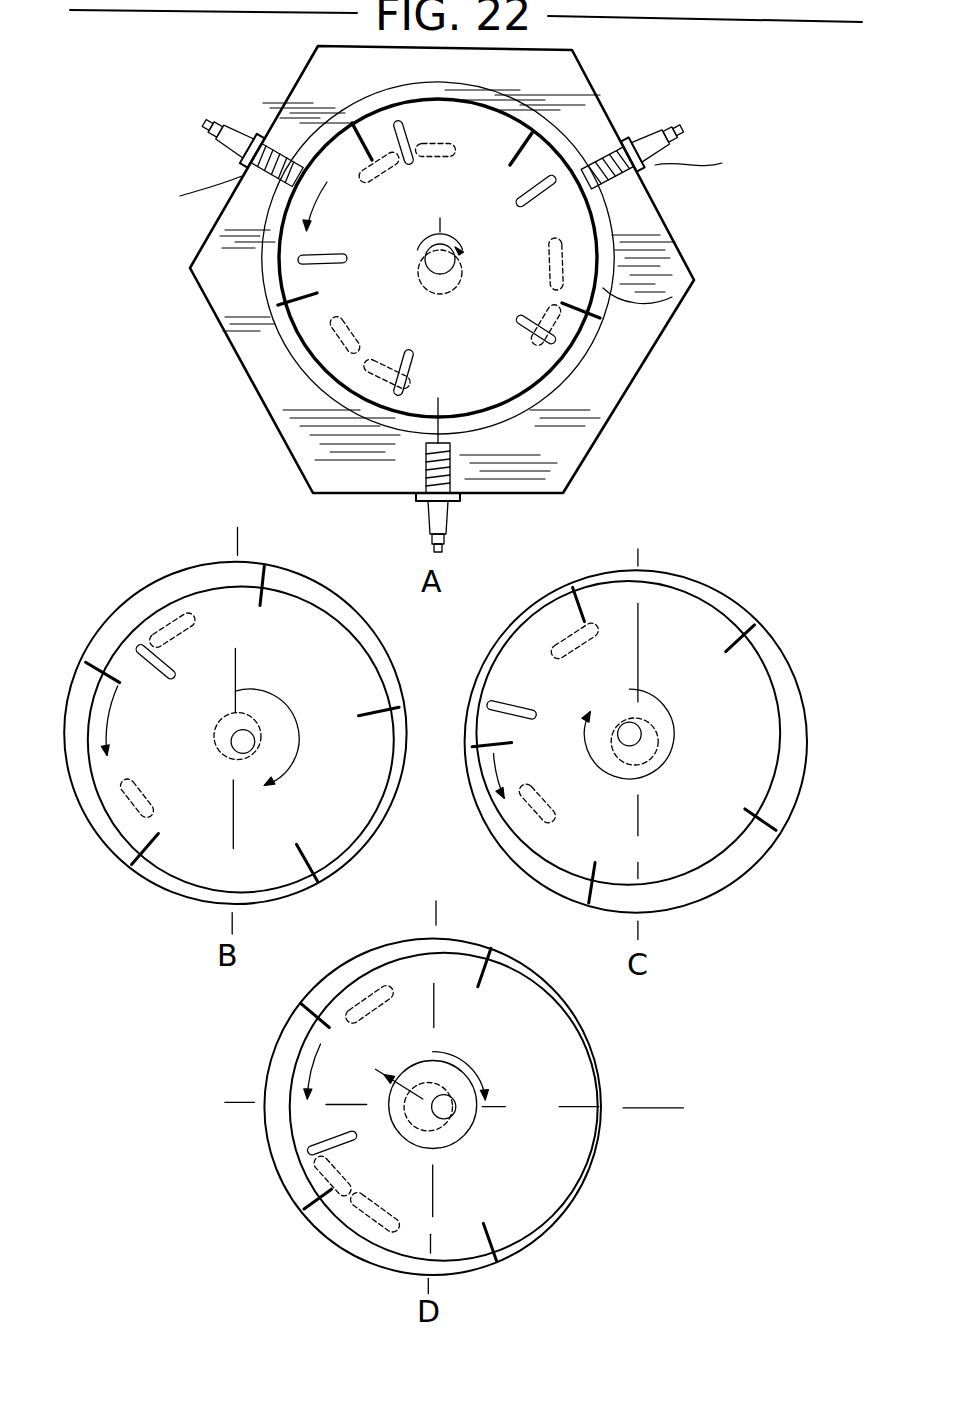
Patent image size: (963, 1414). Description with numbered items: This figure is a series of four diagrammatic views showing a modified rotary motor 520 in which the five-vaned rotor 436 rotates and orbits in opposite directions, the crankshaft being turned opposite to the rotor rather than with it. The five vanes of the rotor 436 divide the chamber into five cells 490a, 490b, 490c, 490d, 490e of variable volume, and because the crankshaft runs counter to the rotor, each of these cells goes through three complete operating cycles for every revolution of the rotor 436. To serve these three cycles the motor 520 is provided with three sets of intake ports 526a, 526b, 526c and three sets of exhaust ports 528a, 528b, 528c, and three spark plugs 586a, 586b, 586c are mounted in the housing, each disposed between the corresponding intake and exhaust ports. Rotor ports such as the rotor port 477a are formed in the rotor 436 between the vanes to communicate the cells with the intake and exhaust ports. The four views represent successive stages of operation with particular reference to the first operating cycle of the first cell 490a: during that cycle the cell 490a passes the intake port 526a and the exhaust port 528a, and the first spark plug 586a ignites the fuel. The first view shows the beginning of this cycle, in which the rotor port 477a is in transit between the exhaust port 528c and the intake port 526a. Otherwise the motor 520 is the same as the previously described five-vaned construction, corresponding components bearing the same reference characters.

The rotor 436 is at (573, 420).
The rotor port 477a is at (363, 122).
The cell 490a is at (392, 138).
The cell 490b is at (292, 226).
The cell 490c is at (318, 372).
The cell 490d is at (567, 387).
The cell 490e is at (603, 290).
The motor 520 is at (228, 375).
The intake port 526a is at (370, 163).
The intake port 526b is at (355, 395).
The intake port 526c is at (566, 264).
The exhaust port 528a is at (333, 330).
The exhaust port 528b is at (562, 327).
The exhaust port 528c is at (442, 142).
The spark plug 586a is at (240, 166).
The spark plug 586b is at (425, 517).
The spark plug 586c is at (663, 162).